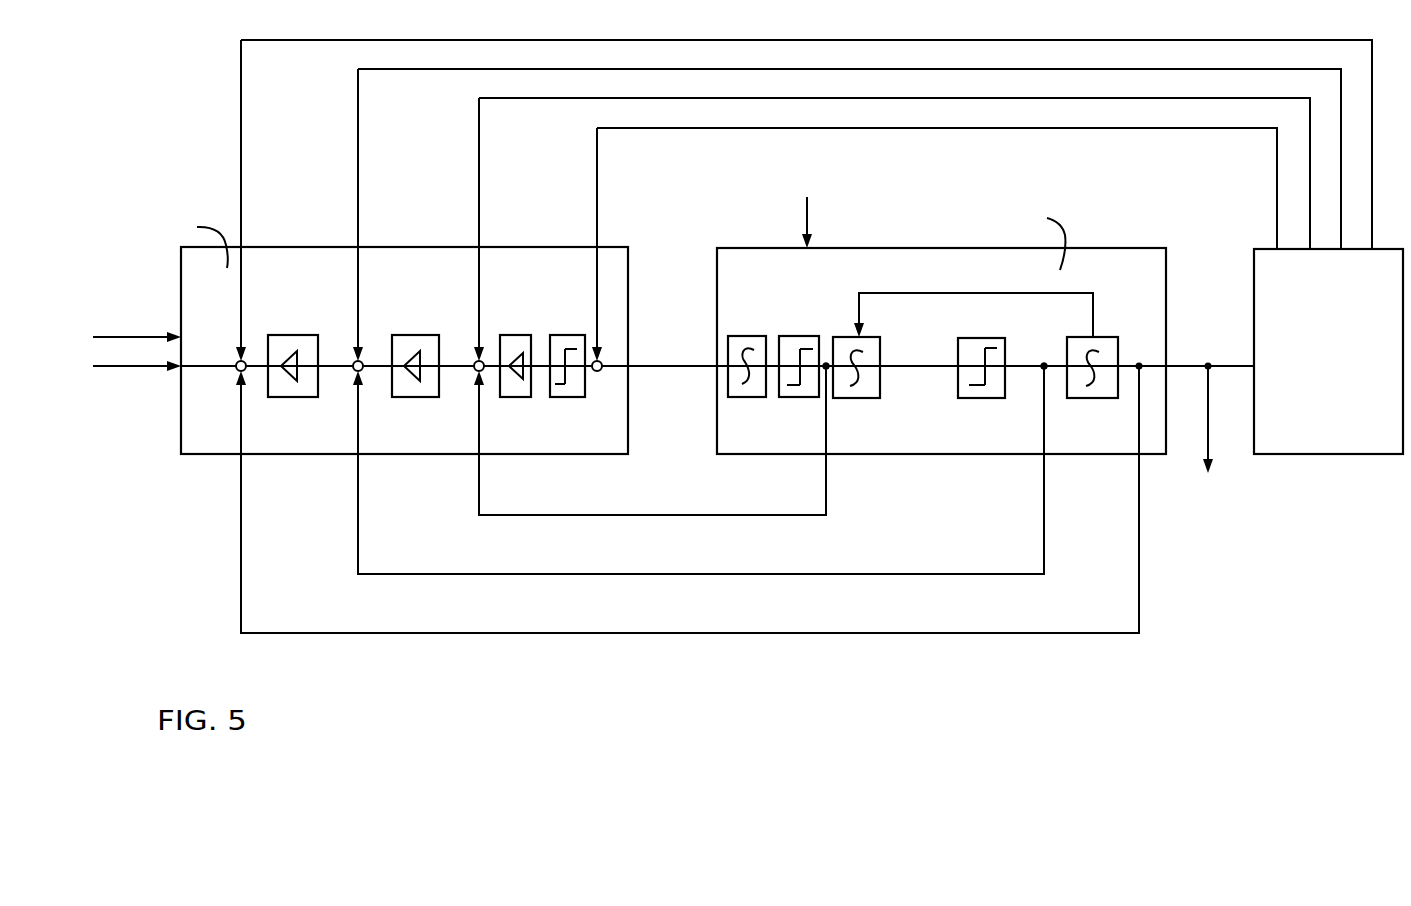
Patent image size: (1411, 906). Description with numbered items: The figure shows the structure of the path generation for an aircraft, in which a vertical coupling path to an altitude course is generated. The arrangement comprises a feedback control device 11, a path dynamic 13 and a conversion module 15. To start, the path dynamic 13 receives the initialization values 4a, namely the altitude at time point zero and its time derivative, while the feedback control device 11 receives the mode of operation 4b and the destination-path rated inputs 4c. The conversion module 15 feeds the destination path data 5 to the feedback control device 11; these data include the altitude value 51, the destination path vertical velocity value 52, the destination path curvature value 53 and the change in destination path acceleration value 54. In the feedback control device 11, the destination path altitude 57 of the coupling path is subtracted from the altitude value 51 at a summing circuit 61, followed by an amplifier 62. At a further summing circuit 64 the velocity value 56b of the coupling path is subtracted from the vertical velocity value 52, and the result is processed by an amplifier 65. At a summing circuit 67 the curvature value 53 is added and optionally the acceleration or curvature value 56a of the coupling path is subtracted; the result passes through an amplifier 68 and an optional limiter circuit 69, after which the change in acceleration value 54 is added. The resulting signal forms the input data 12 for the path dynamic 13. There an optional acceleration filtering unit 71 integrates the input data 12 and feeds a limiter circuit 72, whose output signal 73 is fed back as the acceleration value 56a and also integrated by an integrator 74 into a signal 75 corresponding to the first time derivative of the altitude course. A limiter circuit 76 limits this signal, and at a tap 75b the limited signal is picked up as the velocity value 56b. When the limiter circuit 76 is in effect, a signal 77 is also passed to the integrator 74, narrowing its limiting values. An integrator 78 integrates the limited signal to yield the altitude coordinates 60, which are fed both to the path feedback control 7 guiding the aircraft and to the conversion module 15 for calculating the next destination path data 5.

The destination path data 5 is at (165, 86).
The initialization values 4a is at (826, 221).
The mode of operation 4b is at (137, 325).
The destination-path rated inputs 4c is at (137, 382).
The path feedback control 7 is at (1216, 512).
The feedback control device 11 is at (216, 289).
The input data 12 is at (644, 366).
The path dynamic 13 is at (748, 294).
The conversion module 15 is at (1291, 288).
The altitude value 51 is at (243, 118).
The destination path vertical velocity value 52 is at (360, 131).
The destination path curvature value 53 is at (481, 185).
The change in destination path acceleration value 54 is at (599, 188).
The acceleration or curvature value of coupling path 56a is at (548, 515).
The velocity value of coupling path 56b is at (545, 575).
The destination path altitude 57 is at (540, 633).
The altitude coordinates 60 is at (1185, 365).
The summing circuit 61 is at (234, 360).
The amplifier 62 is at (299, 397).
The summing circuit 64 is at (363, 360).
The amplifier 65 is at (425, 397).
The summing circuit 67 is at (484, 360).
The amplifier 68 is at (517, 397).
The limiter circuit 69 is at (572, 397).
The acceleration filtering unit 71 is at (745, 336).
The limiter circuit 72 is at (800, 336).
The output signal 73 is at (825, 362).
The integrator 74 is at (882, 346).
The signal 75 is at (907, 368).
The tap 75b is at (1033, 353).
The limiter circuit 76 is at (998, 339).
The signal 77 is at (983, 292).
The integrator 78 is at (1108, 337).